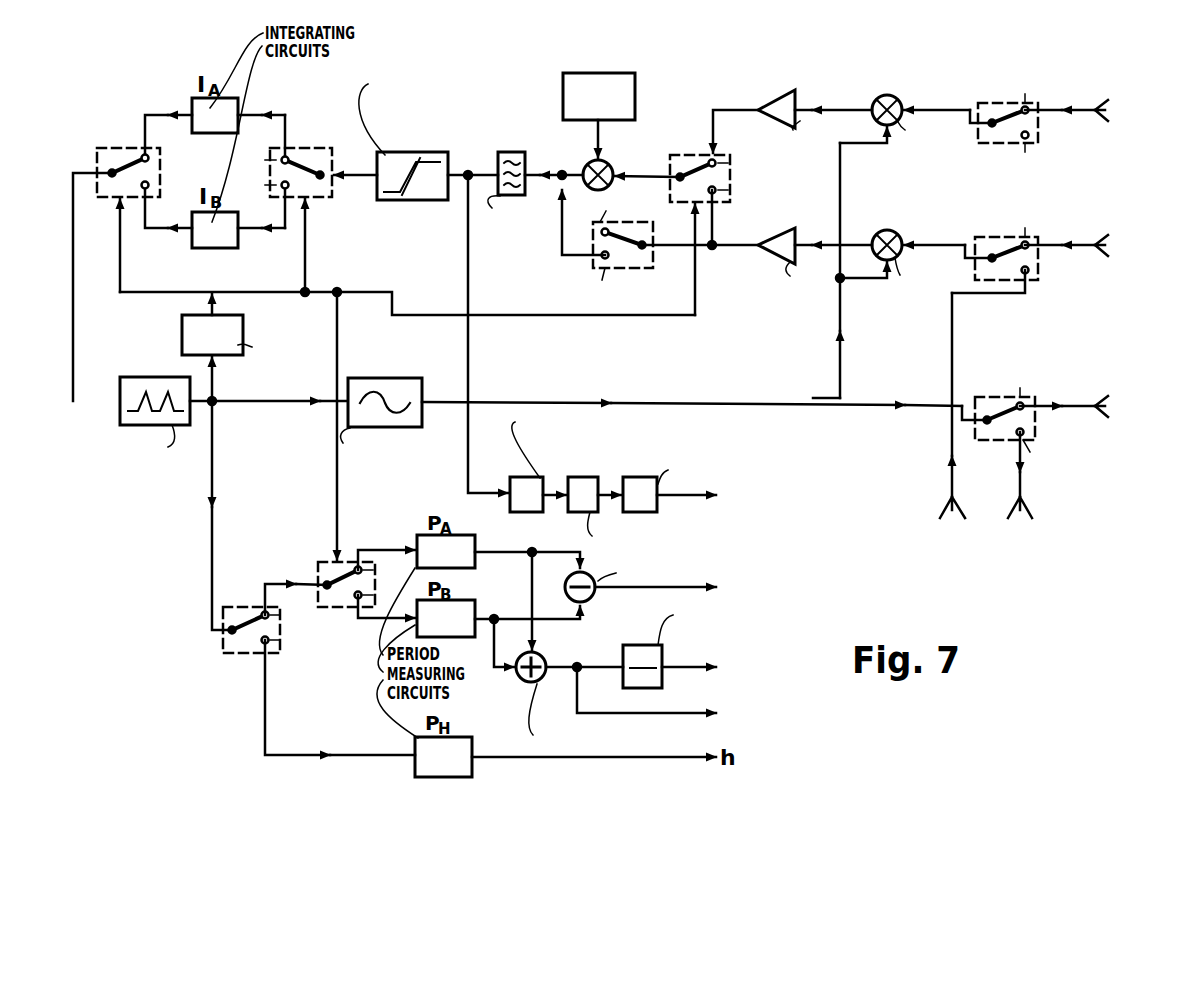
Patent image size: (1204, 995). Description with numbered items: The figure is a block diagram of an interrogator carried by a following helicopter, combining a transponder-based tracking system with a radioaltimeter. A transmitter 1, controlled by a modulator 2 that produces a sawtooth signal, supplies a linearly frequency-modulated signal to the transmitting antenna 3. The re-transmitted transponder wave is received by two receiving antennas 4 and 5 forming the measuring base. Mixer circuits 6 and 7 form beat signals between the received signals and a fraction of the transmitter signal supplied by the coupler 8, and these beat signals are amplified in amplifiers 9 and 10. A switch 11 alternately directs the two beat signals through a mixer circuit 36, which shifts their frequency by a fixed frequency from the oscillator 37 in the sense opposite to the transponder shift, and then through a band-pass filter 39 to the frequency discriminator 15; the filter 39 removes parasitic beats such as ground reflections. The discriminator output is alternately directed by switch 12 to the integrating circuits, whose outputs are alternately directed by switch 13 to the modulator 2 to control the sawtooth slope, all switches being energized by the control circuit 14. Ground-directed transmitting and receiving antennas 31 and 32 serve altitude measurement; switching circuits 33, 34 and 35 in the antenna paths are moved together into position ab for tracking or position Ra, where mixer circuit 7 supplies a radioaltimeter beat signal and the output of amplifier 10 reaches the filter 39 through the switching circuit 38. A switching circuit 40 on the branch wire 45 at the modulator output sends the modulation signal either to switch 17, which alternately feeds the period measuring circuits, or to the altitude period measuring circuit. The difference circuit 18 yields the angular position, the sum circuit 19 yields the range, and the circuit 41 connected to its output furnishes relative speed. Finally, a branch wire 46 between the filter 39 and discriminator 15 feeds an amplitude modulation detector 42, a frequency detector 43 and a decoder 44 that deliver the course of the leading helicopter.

The transmitter 1 is at (388, 377).
The modulator 2 is at (152, 376).
The transmitting antenna 3 is at (1098, 402).
The receiving antenna 4 is at (1102, 242).
The receiving antenna 5 is at (1102, 107).
The mixer circuit 6 is at (891, 96).
The mixer circuit 7 is at (885, 232).
The coupler 8 is at (826, 395).
The amplifier 9 is at (782, 100).
The amplifier 10 is at (782, 234).
The two-position switch 11 is at (710, 153).
The two-position switch 12 is at (309, 147).
The two-position switch 13 is at (125, 146).
The control circuit 14 is at (244, 324).
The frequency discriminator 15 is at (426, 152).
The switch 17 is at (342, 560).
The difference circuit 18 is at (592, 576).
The sum circuit 19 is at (541, 659).
The transmitting antenna 31 is at (1026, 508).
The receiving antenna 32 is at (946, 506).
The switching circuit 33 is at (986, 397).
The switching circuit 34 is at (1000, 236).
The switching circuit 35 is at (998, 103).
The mixer circuit 36 is at (608, 162).
The oscillator 37 is at (635, 100).
The switching circuit 38 is at (634, 270).
The band-pass filter 39 is at (512, 152).
The switching circuit 40 is at (247, 654).
The relative speed measuring circuit 41 is at (641, 645).
The amplitude modulation detector 42 is at (530, 477).
The frequency detector 43 is at (590, 477).
The decoder 44 is at (646, 477).
The branch wire 45 is at (213, 451).
The branch wire 46 is at (469, 238).